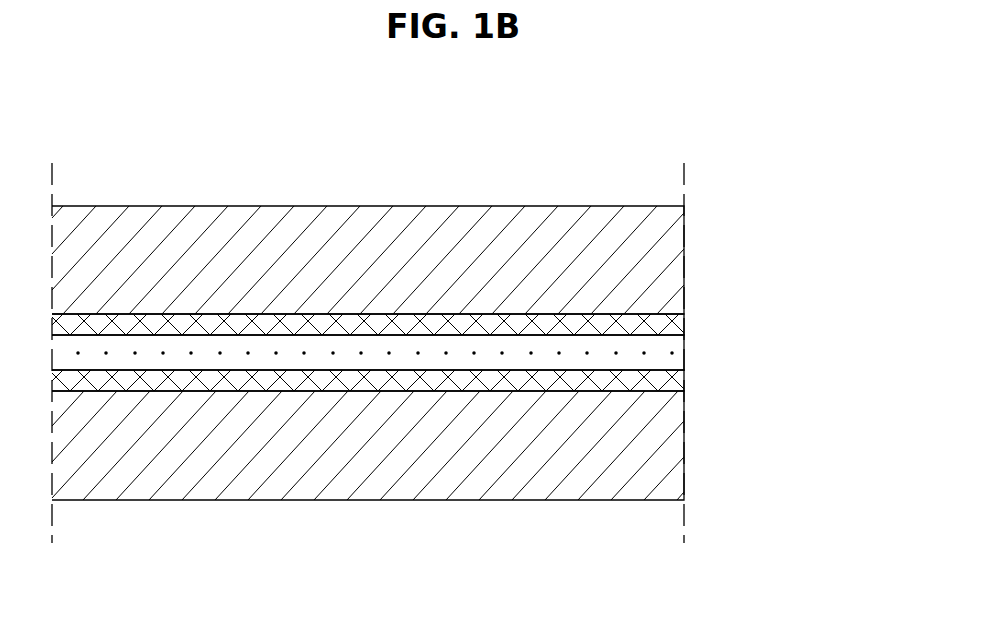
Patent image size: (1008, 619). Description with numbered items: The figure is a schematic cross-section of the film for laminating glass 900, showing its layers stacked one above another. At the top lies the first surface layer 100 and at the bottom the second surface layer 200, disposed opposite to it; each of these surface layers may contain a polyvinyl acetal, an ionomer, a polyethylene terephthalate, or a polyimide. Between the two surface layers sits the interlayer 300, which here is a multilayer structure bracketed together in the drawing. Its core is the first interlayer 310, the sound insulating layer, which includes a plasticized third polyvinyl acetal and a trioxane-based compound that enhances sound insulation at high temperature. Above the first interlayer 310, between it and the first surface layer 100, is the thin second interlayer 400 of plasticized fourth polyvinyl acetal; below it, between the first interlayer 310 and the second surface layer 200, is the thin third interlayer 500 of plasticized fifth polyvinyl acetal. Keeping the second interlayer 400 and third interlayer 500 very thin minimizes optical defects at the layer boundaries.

The film for laminating glass 900 is at (132, 168).
The first surface layer 100 is at (684, 228).
The interlayer 300 is at (797, 288).
The second interlayer 400 is at (684, 328).
The first interlayer 310 is at (684, 346).
The third interlayer 500 is at (684, 378).
The second surface layer 200 is at (684, 474).